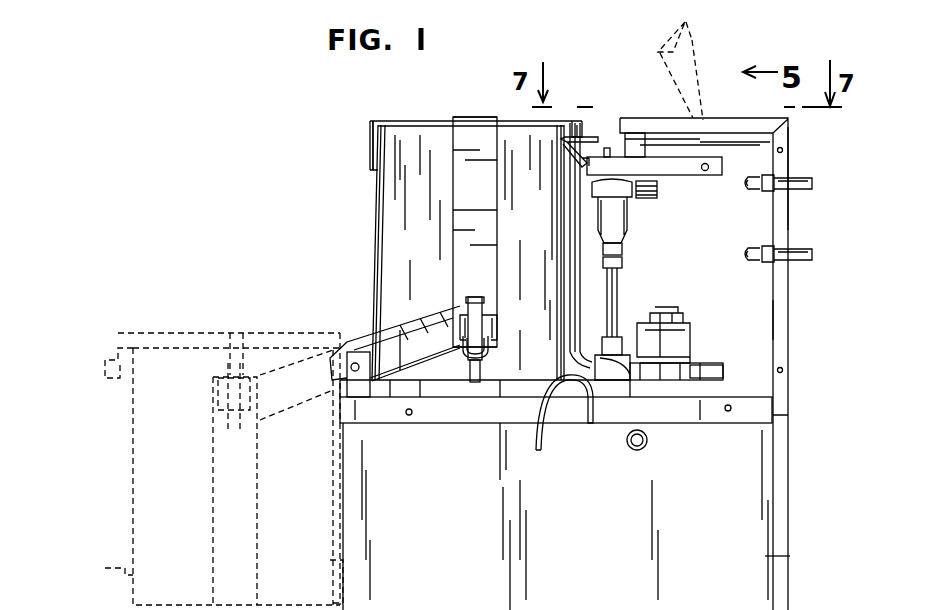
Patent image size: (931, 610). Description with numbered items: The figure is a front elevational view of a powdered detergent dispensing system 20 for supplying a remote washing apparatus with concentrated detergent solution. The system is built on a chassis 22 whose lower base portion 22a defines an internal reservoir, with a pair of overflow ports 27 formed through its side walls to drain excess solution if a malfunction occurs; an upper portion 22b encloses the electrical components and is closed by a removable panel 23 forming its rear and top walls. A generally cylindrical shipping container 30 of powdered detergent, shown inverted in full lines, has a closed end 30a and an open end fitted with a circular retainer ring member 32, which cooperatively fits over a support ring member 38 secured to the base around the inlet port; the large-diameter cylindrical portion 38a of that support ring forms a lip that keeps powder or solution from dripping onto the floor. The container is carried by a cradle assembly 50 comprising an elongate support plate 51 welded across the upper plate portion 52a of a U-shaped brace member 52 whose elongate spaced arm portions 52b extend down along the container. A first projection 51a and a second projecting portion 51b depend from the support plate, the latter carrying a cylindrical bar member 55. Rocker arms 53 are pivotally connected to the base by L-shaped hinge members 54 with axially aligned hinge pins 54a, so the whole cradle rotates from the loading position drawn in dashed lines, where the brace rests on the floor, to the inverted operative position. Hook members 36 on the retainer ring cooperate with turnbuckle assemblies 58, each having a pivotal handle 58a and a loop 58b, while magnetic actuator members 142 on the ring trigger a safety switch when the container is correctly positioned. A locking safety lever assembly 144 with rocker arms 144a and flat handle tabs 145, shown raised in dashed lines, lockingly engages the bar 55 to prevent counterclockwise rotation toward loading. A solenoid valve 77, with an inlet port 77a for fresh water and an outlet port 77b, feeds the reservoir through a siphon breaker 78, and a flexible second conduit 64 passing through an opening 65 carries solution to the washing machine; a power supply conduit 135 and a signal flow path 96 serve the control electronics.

The powdered detergent dispensing system 20 is at (262, 153).
The chassis 22 is at (804, 545).
The lower base portion 22a is at (786, 555).
The upper portion 22b is at (792, 322).
The panel 23 is at (803, 233).
The overflow ports 27 is at (631, 452).
The shipping container 30 is at (380, 202).
The closed end 30a is at (408, 120).
The retainer ring member 32 is at (140, 334).
The hook members 36 is at (476, 398).
The support ring member 38 is at (401, 411).
The large-diameter cylindrical portion 38a is at (430, 400).
The cradle assembly 50 is at (440, 239).
The elongate support plate 51 is at (172, 604).
The first projection 51a is at (370, 142).
The second projecting portion 51b is at (583, 120).
The U-shaped brace member 52 is at (460, 198).
The upper plate portion 52a is at (470, 117).
The elongate spaced arm portions 52b is at (455, 257).
The rocker arms 53 is at (418, 330).
The L-shaped hinge member 54 is at (347, 372).
The hinge pin 54a is at (374, 371).
The cylindrical bar member 55 is at (105, 569).
The turnbuckle assemblies 58 is at (502, 310).
The pivotal handle 58a is at (494, 308).
The loop 58b is at (490, 346).
The second conduit 64 is at (537, 447).
The opening 65 is at (587, 402).
The solenoid valve 77 is at (682, 320).
The inlet port 77a is at (712, 380).
The outlet port 77b is at (636, 381).
The siphon breaker 78 is at (618, 212).
The signal flow path 96 is at (812, 253).
The power supply conduit 135 is at (812, 179).
The magnetic actuator members 142 is at (592, 366).
The locking safety lever assembly 144 is at (708, 110).
The rocker arms 144a is at (640, 157).
The flat handle tabs 145 is at (566, 152).